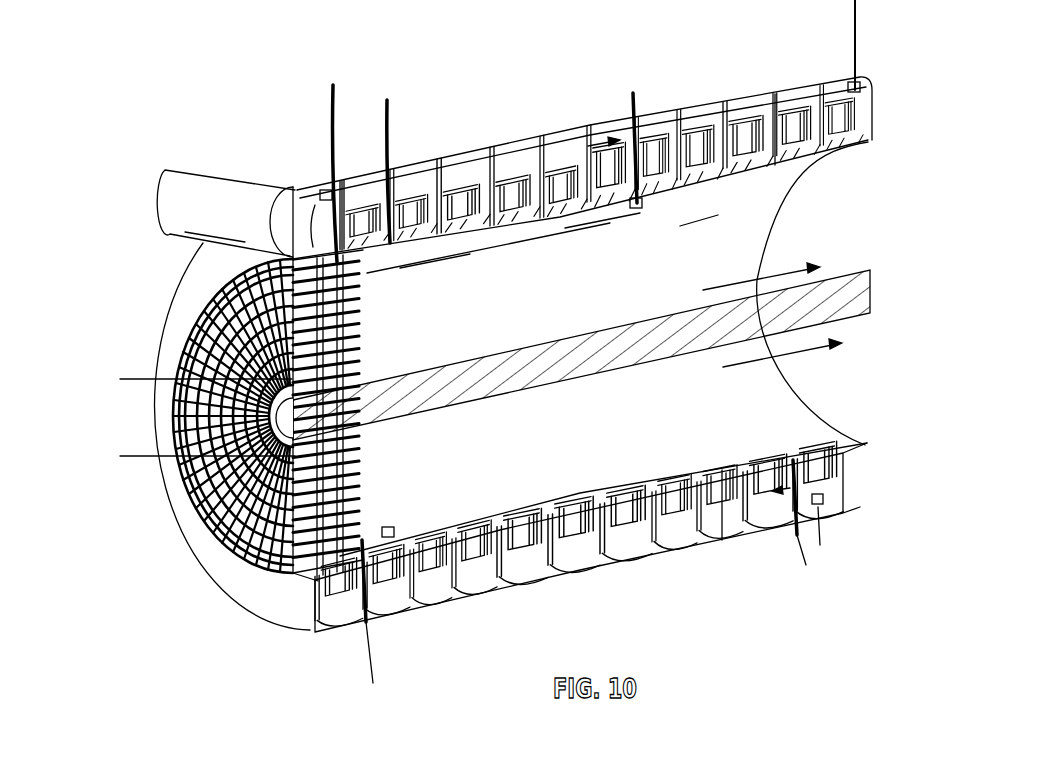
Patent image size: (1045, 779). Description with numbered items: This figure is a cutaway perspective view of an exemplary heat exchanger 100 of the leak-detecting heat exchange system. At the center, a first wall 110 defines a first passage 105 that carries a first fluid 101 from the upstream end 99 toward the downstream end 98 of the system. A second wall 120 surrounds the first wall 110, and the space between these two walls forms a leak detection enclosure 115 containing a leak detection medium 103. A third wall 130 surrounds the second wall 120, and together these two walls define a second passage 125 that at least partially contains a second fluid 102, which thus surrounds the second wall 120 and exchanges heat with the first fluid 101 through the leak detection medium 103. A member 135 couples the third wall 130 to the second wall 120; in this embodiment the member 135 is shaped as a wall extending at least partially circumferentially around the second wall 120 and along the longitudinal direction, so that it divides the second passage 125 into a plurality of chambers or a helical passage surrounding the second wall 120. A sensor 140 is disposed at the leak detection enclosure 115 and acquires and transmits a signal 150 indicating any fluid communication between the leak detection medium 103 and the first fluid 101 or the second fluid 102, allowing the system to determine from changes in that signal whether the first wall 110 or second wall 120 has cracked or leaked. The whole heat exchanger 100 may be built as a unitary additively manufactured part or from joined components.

The downstream end 98 is at (880, 299).
The upstream end 99 is at (106, 434).
The heat exchanger 100 is at (697, 22).
The first fluid 101 is at (120, 379).
The second fluid 102 is at (172, 190).
The leak detection medium 103 is at (402, 532).
The first passage 105 is at (586, 419).
The first wall 110 is at (590, 240).
The leak detection enclosure 115 is at (240, 550).
The second wall 120 is at (519, 192).
The second passage 125 is at (420, 176).
The third wall 130 is at (453, 168).
The member 135 is at (778, 108).
The sensor 140 is at (318, 192).
The signal 150 is at (334, 130).